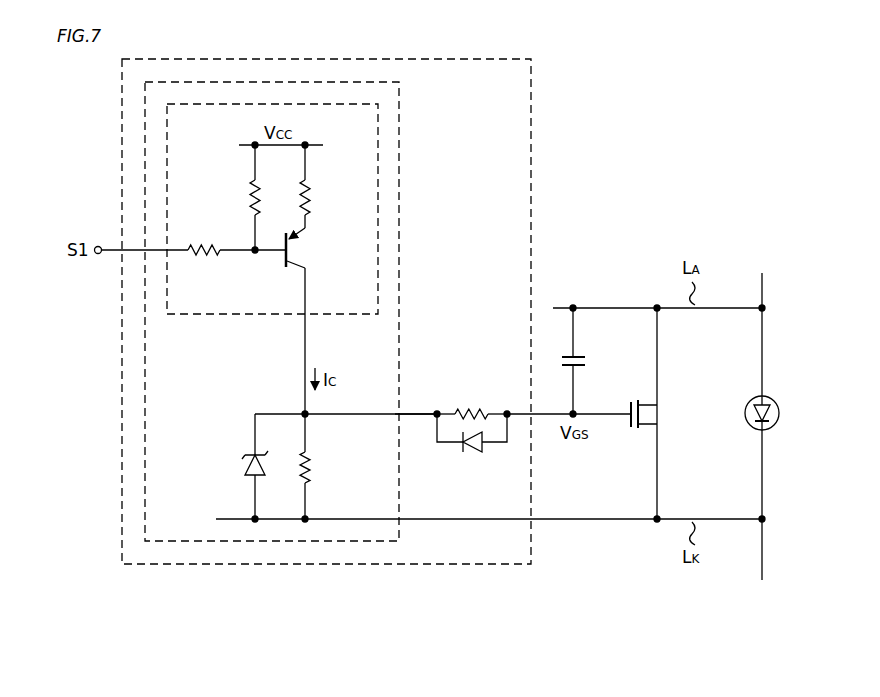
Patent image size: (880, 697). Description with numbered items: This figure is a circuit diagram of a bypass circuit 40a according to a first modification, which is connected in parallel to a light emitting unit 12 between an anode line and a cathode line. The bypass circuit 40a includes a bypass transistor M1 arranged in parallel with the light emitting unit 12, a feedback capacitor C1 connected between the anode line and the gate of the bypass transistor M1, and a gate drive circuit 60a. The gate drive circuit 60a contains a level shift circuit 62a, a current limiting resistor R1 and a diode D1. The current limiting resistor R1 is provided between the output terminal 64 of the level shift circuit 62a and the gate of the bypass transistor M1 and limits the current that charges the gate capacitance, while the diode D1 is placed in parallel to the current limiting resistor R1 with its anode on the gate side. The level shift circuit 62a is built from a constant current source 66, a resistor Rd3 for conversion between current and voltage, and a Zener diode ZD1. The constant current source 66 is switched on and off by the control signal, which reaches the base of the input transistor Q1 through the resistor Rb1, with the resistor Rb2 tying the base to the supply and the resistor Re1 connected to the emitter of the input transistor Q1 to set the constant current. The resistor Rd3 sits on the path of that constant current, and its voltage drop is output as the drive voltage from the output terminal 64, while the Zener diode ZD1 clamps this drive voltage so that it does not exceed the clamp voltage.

The light emitting unit 12 is at (780, 413).
The bypass circuit 40a is at (478, 663).
The gate drive circuit 60a is at (355, 566).
The level shift circuit 62a is at (400, 238).
The output terminal 64 is at (408, 412).
The constant current source 66 is at (199, 316).
The resistor Rb1 is at (201, 262).
The resistor Rb2 is at (248, 195).
The resistor Re1 is at (318, 195).
The input transistor Q1 is at (310, 250).
The Zener diode ZD1 is at (244, 467).
The resistor Rd3 is at (318, 467).
The current limiting resistor R1 is at (476, 405).
The diode D1 is at (469, 454).
The feedback capacitor C1 is at (593, 360).
The bypass transistor M1 is at (663, 413).